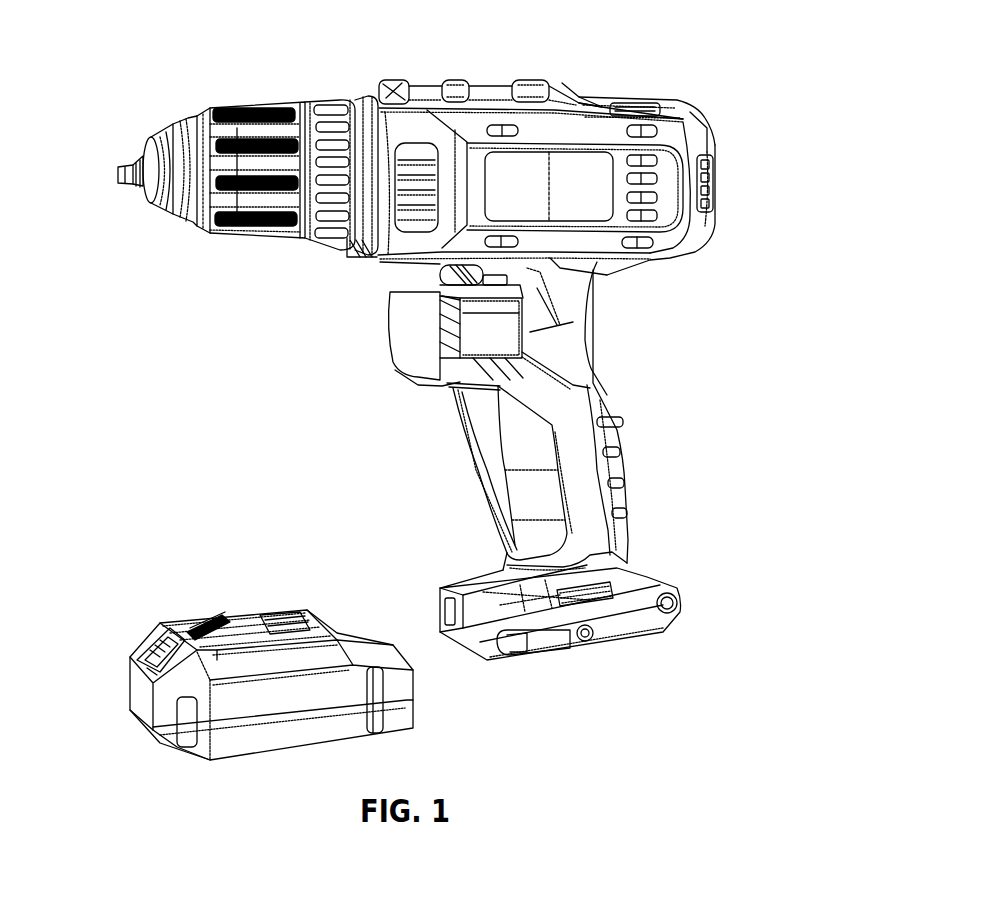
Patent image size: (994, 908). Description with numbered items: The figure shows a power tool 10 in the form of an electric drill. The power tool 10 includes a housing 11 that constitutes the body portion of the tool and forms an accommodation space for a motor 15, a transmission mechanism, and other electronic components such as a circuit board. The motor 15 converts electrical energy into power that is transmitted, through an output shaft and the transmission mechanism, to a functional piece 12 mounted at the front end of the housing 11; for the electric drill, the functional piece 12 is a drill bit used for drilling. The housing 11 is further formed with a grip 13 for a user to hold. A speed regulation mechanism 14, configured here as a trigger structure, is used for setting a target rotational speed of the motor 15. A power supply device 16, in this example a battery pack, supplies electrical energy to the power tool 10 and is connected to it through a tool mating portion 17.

The power tool 10 is at (732, 92).
The housing 11 is at (353, 97).
The functional piece 12 is at (137, 170).
The grip 13 is at (507, 457).
The speed regulation mechanism 14 is at (400, 333).
The motor 15 is at (592, 137).
The power supply device 16 is at (150, 707).
The tool mating portion 17 is at (440, 607).